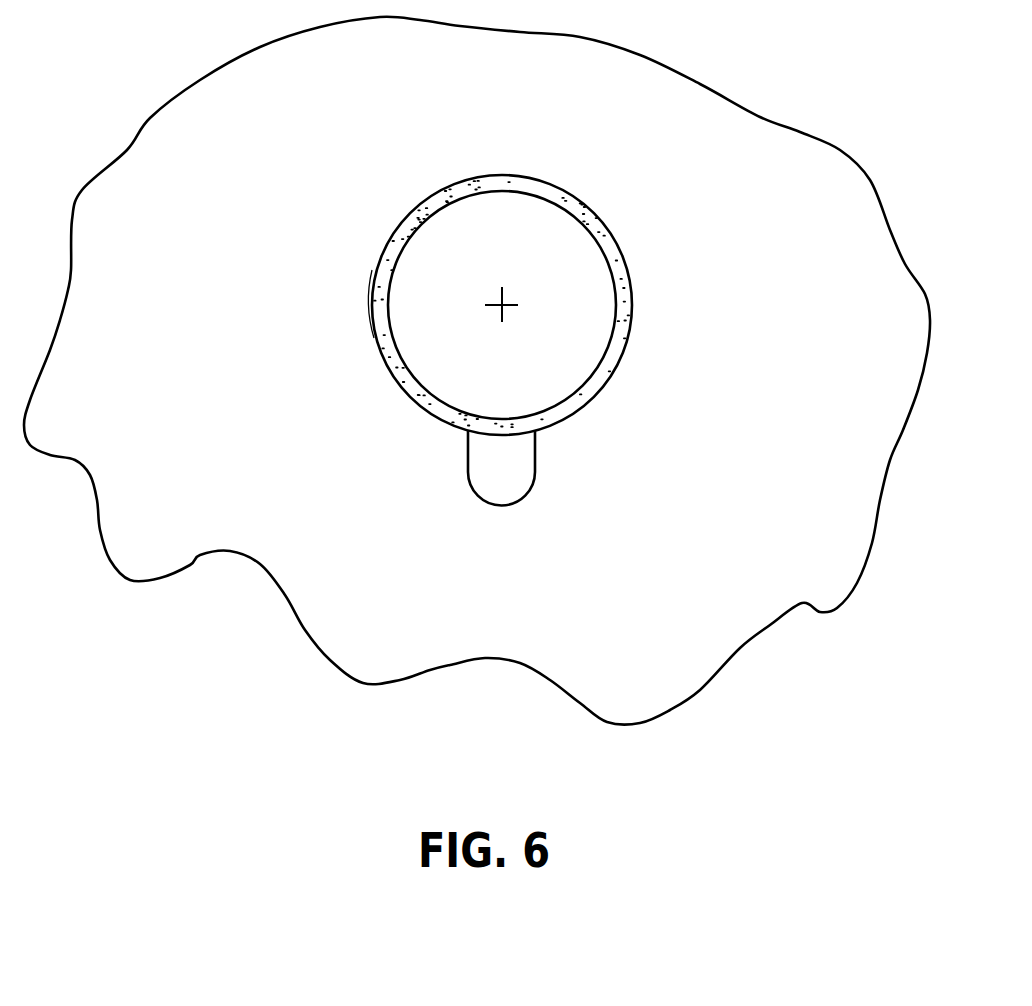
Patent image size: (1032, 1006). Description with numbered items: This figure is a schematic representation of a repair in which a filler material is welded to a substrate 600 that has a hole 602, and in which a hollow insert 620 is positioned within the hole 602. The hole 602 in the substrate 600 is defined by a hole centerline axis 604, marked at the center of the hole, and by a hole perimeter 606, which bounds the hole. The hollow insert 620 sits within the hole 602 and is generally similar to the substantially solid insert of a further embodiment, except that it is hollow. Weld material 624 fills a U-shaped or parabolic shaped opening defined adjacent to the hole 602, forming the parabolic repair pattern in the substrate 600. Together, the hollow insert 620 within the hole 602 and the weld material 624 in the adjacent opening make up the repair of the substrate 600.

The substrate 600 is at (832, 170).
The hole 602 is at (636, 311).
The hole centerline axis 604 is at (509, 300).
The hole perimeter 606 is at (381, 262).
The hollow insert 620 is at (385, 340).
The weld material 624 is at (512, 470).